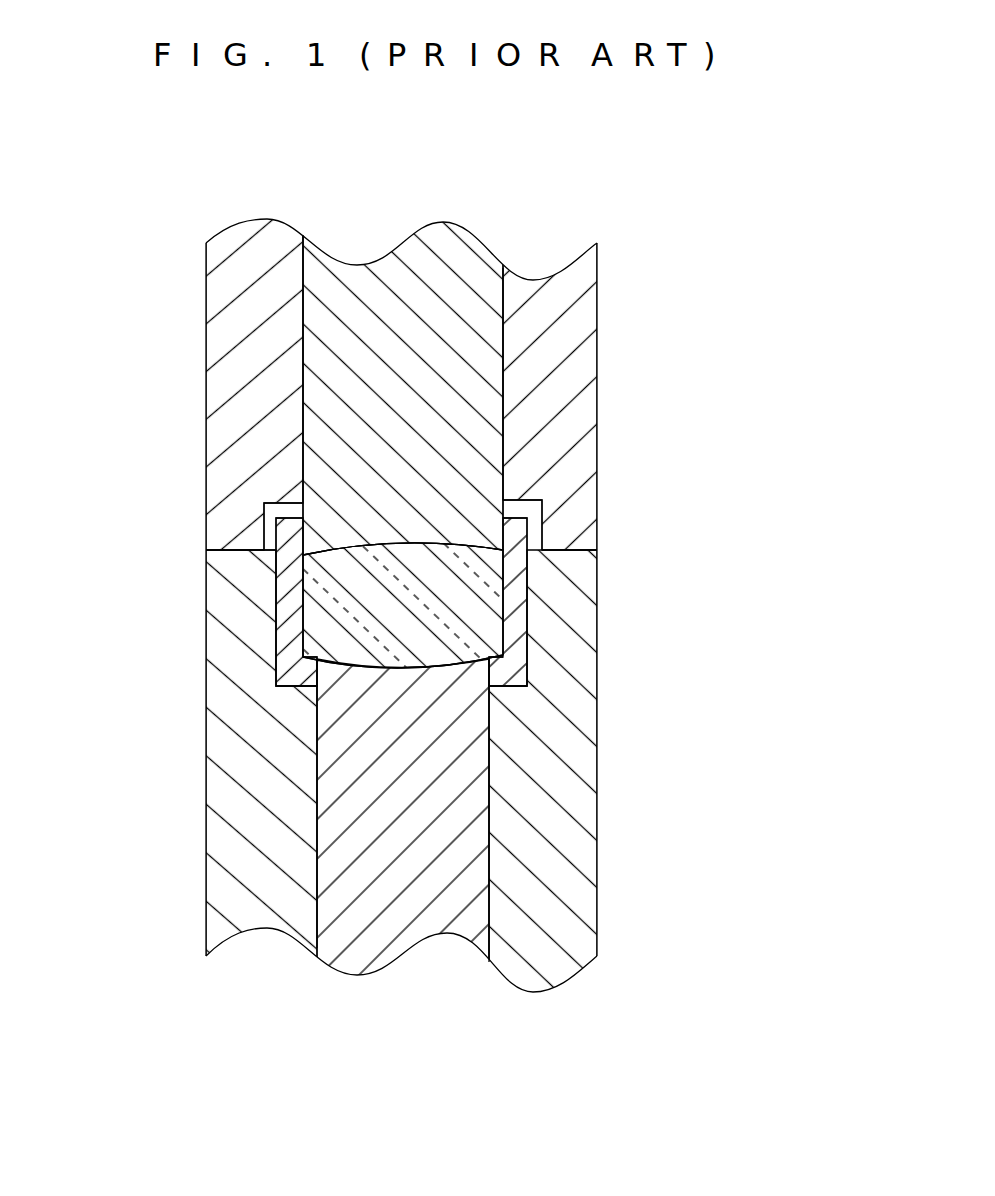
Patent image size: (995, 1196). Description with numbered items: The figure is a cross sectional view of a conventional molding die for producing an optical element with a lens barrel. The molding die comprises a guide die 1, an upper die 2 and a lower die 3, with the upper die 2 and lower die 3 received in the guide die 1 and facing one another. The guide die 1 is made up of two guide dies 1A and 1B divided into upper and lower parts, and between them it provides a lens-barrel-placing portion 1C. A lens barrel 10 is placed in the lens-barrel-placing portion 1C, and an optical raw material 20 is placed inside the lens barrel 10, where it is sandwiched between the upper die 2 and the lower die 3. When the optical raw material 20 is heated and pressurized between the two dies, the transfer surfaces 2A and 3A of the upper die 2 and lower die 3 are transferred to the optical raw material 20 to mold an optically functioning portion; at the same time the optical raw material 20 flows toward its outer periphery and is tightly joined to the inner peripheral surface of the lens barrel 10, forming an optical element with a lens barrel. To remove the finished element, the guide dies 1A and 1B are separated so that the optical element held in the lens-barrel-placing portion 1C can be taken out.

The guide die 1 is at (783, 314).
The upper guide die 1A is at (565, 395).
The lower guide die 1B is at (545, 865).
The lens-barrel-placing portion 1C is at (512, 513).
The upper die 2 is at (430, 308).
The transfer surface of upper die 2A is at (397, 540).
The lower die 3 is at (403, 910).
The transfer surface of lower die 3A is at (378, 670).
The lens barrel 10 is at (518, 603).
The optical raw material 20 is at (350, 595).